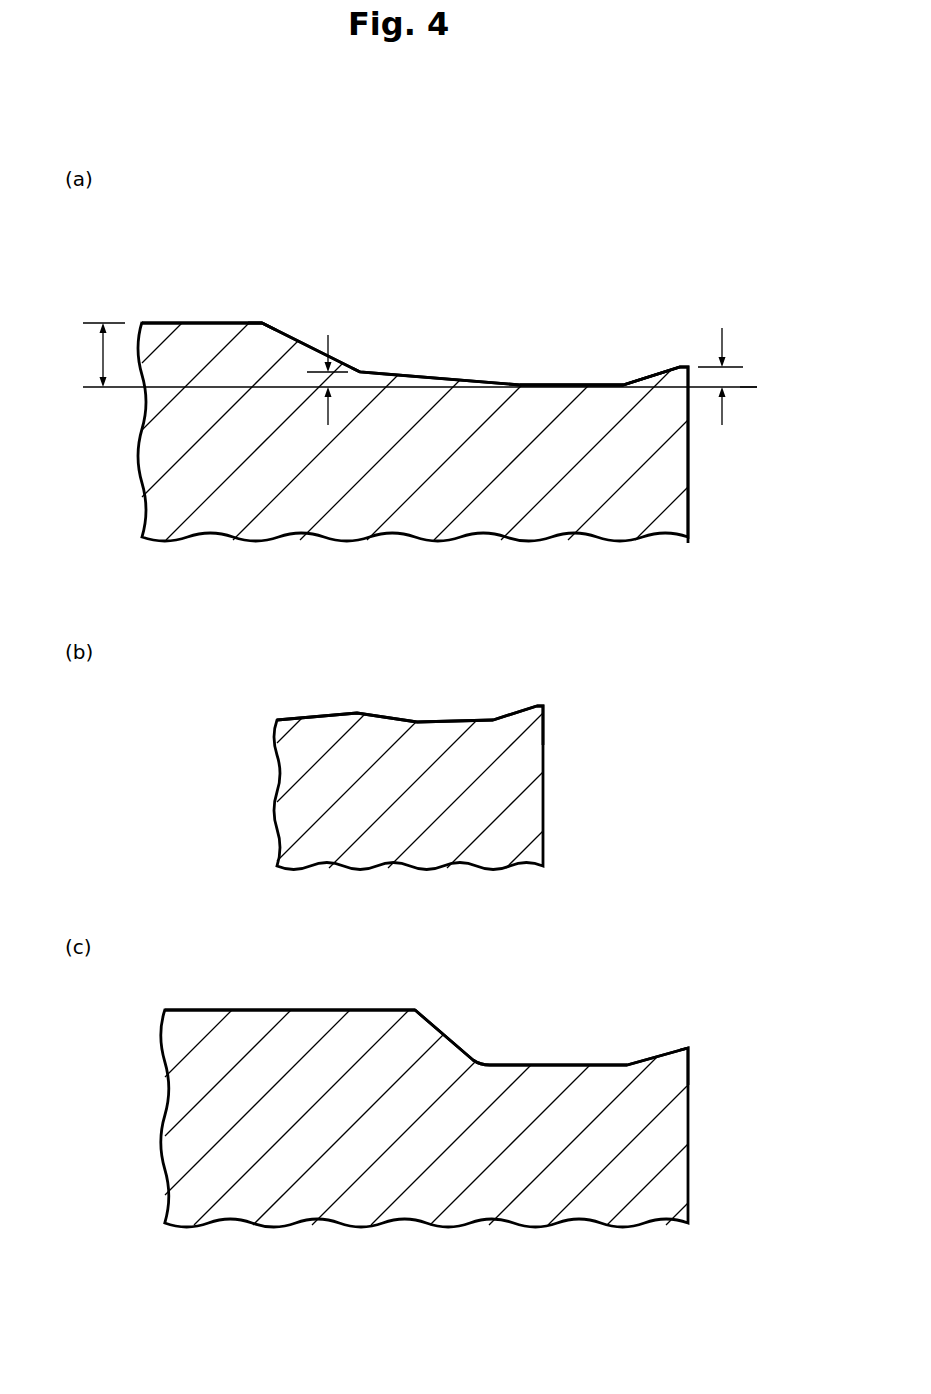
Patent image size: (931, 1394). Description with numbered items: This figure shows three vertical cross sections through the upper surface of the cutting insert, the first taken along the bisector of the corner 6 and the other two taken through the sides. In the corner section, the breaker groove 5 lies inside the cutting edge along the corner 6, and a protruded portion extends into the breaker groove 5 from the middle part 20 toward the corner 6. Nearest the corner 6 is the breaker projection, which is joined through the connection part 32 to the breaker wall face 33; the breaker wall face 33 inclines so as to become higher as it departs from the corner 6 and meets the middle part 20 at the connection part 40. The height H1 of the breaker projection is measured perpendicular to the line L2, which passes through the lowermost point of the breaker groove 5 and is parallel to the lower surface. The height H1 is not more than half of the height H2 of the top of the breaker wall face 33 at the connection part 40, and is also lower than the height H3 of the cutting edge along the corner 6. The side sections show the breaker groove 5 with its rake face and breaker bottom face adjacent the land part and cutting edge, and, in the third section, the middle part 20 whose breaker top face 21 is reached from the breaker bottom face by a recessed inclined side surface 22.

The breaker groove 5 is at (598, 375).
The corner 6 is at (688, 366).
The middle part 20 is at (215, 321).
The breaker top face 21 is at (362, 1009).
The inclined side surface 22 is at (438, 1029).
The connection part 32 is at (362, 371).
The breaker wall face 33 is at (308, 346).
The connection part 40 is at (262, 321).
The height of the breaker projection H1 is at (330, 375).
The height of the top of the breaker wall face H2 is at (95, 355).
The height of the cutting edge H3 is at (723, 375).
The line L2 is at (746, 391).